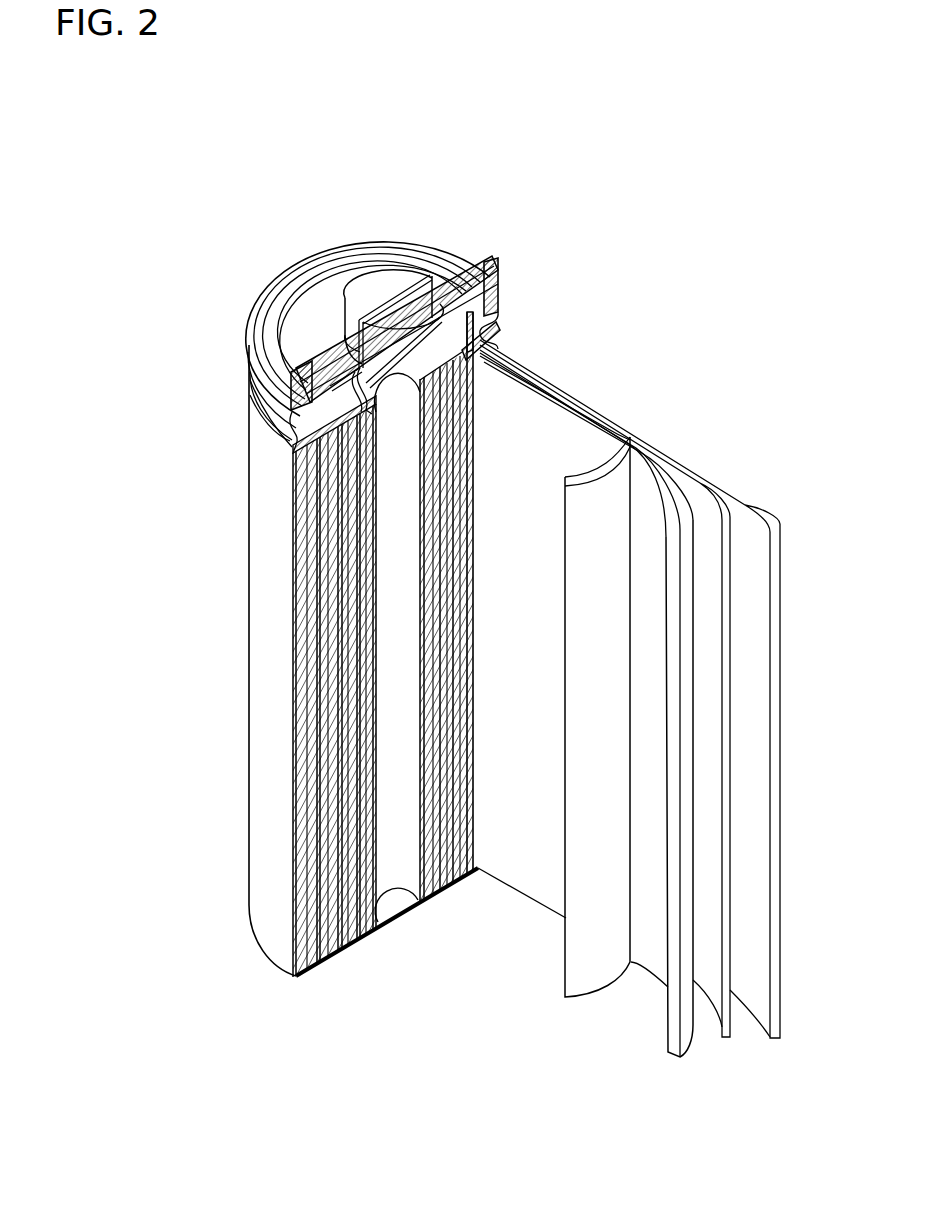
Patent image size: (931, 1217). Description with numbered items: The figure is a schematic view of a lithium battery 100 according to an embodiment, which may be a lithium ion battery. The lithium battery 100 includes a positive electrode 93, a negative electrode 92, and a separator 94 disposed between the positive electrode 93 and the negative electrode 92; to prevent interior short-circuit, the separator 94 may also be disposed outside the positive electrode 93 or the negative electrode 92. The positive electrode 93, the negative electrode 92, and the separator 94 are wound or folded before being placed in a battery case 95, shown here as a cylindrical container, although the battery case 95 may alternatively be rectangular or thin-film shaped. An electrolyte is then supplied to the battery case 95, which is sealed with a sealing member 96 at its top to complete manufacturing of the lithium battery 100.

The lithium battery 100 is at (451, 186).
The sealing member 96 is at (372, 290).
The battery case 95 is at (257, 652).
The separator 94 is at (718, 497).
The positive electrode 93 is at (680, 487).
The negative electrode 92 is at (757, 500).